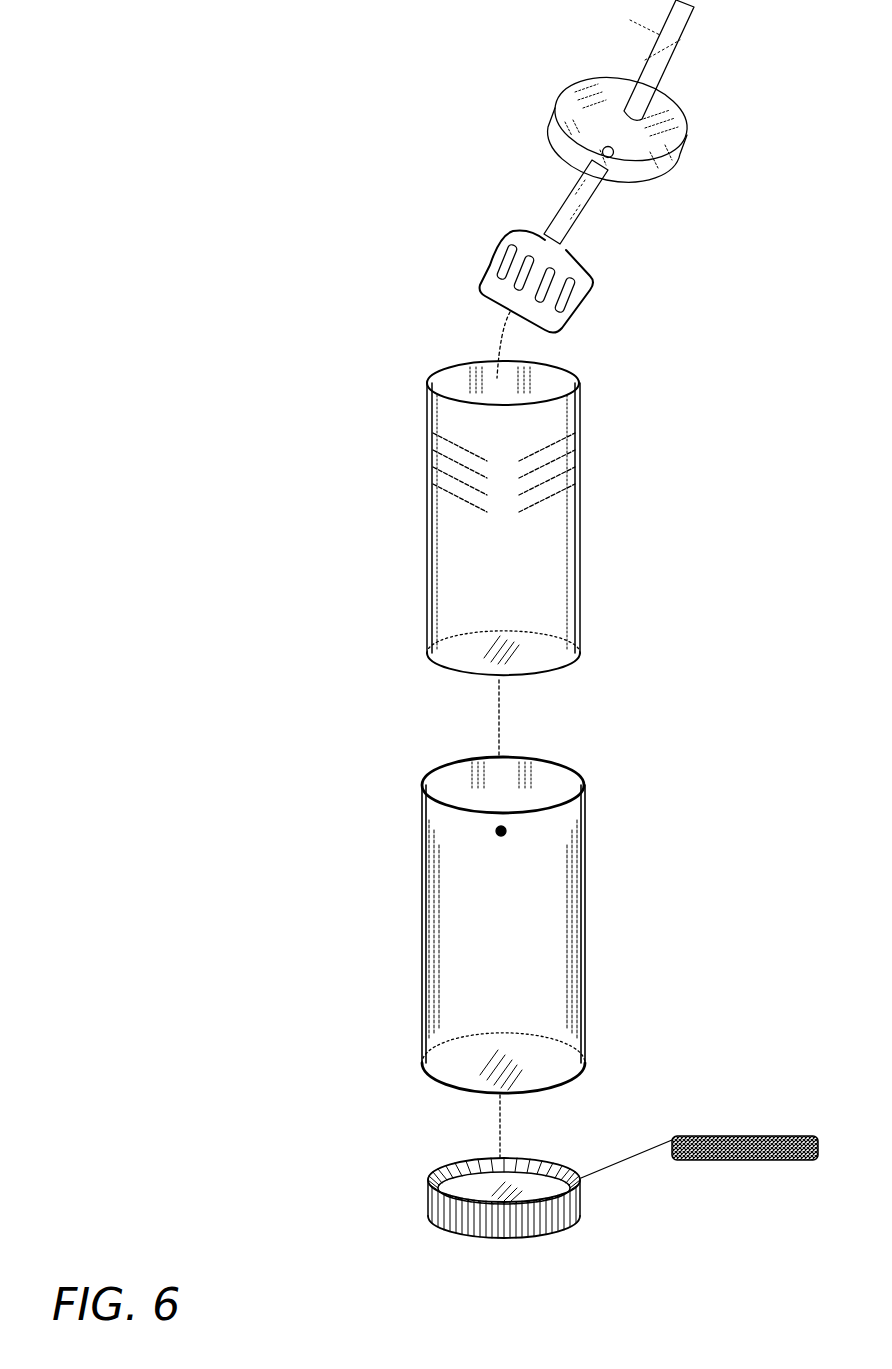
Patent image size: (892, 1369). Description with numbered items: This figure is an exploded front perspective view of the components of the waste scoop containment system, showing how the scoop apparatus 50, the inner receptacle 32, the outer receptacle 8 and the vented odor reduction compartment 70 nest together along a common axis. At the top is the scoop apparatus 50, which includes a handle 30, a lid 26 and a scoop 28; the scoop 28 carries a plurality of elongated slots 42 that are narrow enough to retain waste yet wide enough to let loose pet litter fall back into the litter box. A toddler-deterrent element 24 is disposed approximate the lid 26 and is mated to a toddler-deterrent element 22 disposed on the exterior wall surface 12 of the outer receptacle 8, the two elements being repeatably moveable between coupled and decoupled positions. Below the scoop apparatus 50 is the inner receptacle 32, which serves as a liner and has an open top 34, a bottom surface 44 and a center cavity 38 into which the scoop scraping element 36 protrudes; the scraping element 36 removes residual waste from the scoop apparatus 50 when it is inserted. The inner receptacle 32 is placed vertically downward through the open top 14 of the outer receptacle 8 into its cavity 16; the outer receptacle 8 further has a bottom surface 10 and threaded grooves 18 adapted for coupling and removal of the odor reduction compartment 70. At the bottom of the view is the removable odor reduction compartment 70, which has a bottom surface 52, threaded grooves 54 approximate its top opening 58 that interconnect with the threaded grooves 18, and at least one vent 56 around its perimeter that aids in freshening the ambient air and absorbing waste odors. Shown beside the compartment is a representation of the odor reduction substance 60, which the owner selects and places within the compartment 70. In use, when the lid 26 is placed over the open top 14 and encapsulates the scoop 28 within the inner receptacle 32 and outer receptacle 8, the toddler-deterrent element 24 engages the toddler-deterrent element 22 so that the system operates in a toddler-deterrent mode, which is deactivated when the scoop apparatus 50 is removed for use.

The outer receptacle 8 is at (586, 902).
The bottom surface 10 is at (430, 1077).
The wall surface 12 is at (586, 946).
The open top 14 is at (430, 792).
The cavity 16 is at (467, 865).
The threaded grooves 18 is at (582, 1078).
The toddler-deterrent element 22 is at (506, 829).
The toddler-deterrent element 24 is at (602, 154).
The lid 26 is at (577, 101).
The scoop 28 is at (480, 292).
The handle 30 is at (676, 65).
The inner receptacle 32 is at (427, 528).
The open top 34 is at (430, 365).
The scoop scraping element 36 is at (432, 472).
The center cavity 38 is at (527, 535).
The elongated slots 42 is at (487, 285).
The bottom surface 44 is at (427, 655).
The scoop apparatus 50 is at (600, 222).
The bottom surface 52 is at (465, 1193).
The threaded grooves 54 is at (575, 1222).
The vent 56 is at (485, 1225).
The top opening 58 is at (462, 1160).
The odor reduction substance 60 is at (745, 1137).
The vented odor reduction compartment 70 is at (553, 1190).